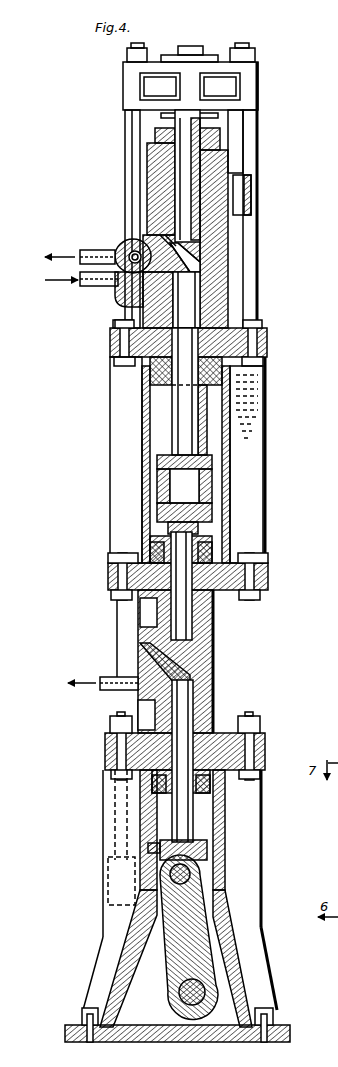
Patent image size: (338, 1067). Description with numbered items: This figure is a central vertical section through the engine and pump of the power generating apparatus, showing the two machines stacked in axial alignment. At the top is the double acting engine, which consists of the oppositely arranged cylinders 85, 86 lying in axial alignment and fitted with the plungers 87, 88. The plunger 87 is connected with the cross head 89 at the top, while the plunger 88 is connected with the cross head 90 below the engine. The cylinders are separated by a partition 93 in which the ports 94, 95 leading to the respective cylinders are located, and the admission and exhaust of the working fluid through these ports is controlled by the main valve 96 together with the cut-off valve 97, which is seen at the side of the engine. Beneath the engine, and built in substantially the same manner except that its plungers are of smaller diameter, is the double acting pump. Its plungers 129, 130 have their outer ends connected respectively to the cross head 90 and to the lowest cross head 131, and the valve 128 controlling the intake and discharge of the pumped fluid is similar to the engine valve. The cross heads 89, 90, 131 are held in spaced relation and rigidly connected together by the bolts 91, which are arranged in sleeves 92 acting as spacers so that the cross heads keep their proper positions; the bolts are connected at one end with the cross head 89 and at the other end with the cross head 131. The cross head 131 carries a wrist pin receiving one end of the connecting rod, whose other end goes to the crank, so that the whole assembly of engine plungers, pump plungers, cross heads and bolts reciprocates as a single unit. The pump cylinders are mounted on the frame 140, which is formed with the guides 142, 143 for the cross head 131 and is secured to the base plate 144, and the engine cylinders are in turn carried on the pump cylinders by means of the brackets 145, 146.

The cross head 89 is at (250, 85).
The sleeves 92 is at (128, 135).
The cylinder 85 is at (152, 195).
The plunger 87 is at (190, 220).
The bolts 91 is at (252, 195).
The partition 93 is at (195, 258).
The cylinder 86 is at (196, 297).
The cut-off valve 97 is at (122, 244).
The main valve 96 is at (180, 250).
The port 94 is at (170, 245).
The port 95 is at (140, 290).
The bracket 145 is at (116, 428).
The bracket 146 is at (250, 436).
The plunger 88 is at (190, 410).
The cross head 90 is at (212, 486).
The plunger 129 is at (190, 610).
The valve 128 is at (200, 665).
The guide 143 is at (140, 805).
The guide 142 is at (226, 815).
The plunger 130 is at (192, 838).
The cross head 131 is at (160, 843).
The frame 140 is at (106, 936).
The base plate 144 is at (282, 1033).